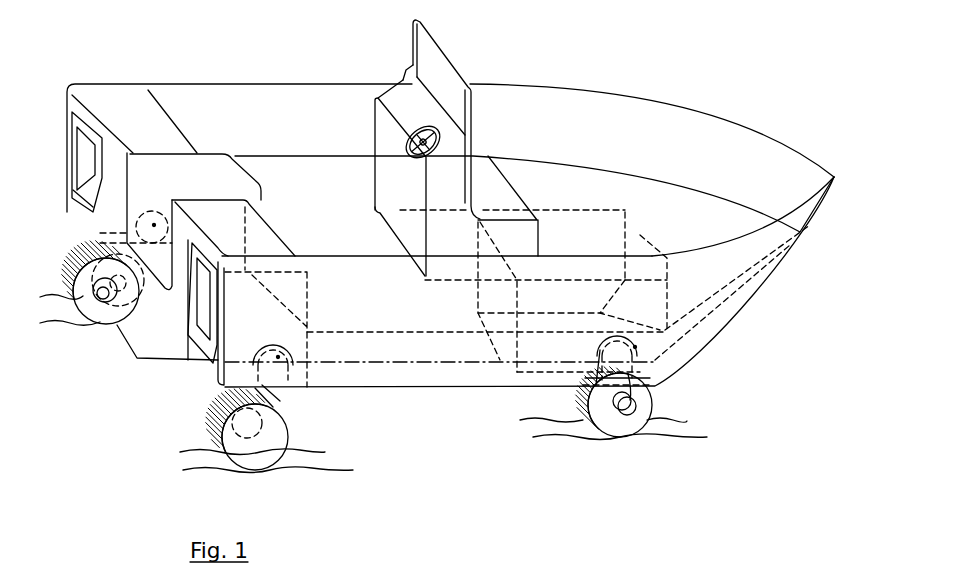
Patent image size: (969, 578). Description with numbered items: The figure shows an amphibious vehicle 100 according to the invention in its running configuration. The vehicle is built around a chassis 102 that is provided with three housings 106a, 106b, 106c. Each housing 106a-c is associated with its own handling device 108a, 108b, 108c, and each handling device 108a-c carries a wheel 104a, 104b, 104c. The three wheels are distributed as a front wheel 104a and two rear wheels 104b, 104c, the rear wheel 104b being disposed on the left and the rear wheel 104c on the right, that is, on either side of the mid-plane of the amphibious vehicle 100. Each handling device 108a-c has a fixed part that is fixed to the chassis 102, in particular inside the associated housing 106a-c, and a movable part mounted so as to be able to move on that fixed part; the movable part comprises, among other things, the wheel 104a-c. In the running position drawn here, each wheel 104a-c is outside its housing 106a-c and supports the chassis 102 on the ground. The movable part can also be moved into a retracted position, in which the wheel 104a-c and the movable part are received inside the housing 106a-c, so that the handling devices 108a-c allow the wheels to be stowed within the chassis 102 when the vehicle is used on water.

The amphibious vehicle 100 is at (437, 271).
The chassis 102 is at (752, 163).
The front wheel 104a is at (608, 428).
The rear wheel 104b is at (100, 316).
The rear wheel 104c is at (270, 450).
The housing 106a is at (583, 228).
The housing 106b is at (123, 128).
The housing 106c is at (258, 305).
The handling device 108a is at (630, 370).
The handling device 108b is at (138, 218).
The handling device 108c is at (273, 398).